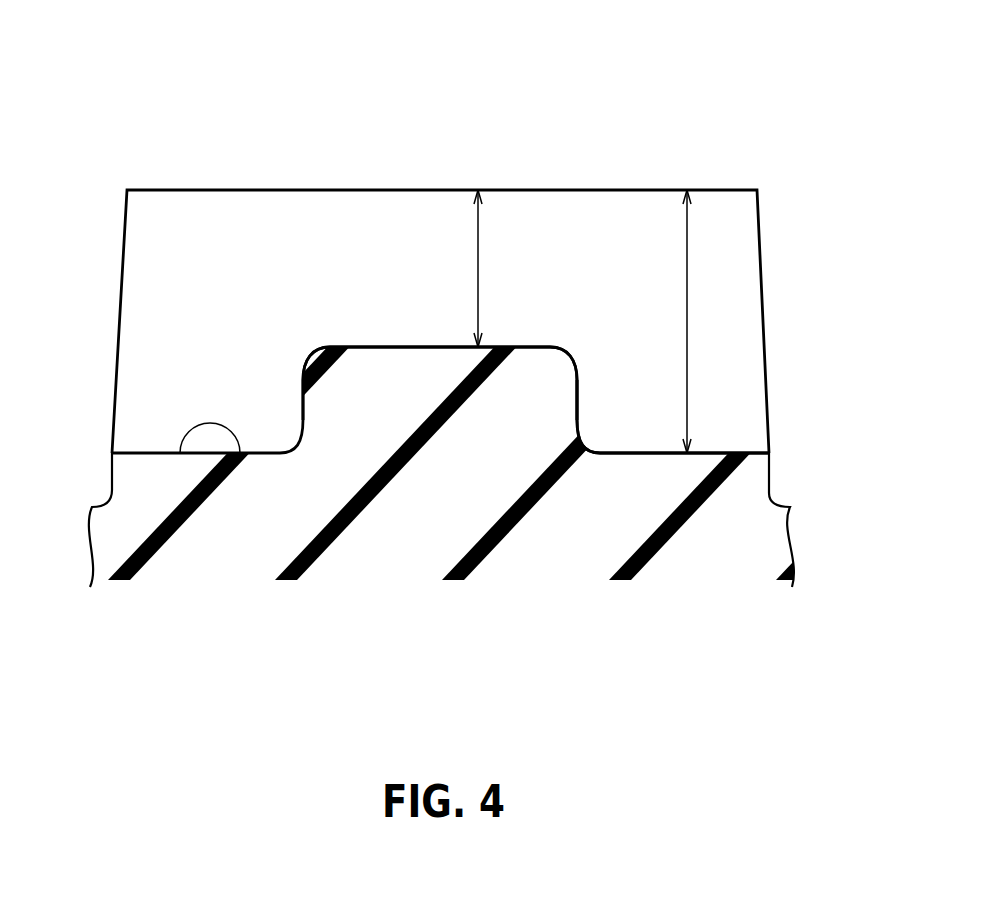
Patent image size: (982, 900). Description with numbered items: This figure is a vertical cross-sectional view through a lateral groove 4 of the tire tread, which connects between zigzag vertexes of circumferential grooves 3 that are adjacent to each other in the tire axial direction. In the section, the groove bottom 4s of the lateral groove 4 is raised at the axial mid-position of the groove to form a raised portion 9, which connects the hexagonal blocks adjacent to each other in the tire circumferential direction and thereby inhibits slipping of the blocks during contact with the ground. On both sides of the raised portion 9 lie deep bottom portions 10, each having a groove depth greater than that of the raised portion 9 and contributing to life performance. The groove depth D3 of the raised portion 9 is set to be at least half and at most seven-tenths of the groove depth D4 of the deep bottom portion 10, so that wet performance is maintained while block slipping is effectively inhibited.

The circumferential groove 3 is at (58, 282).
The lateral groove 4 is at (230, 163).
The groove bottom 4s is at (240, 453).
The raised portion 9 is at (400, 333).
The deep bottom portion 10 is at (648, 408).
The groove depth of the raised portion D3 is at (478, 268).
The groove depth of the deep bottom portion D4 is at (687, 280).